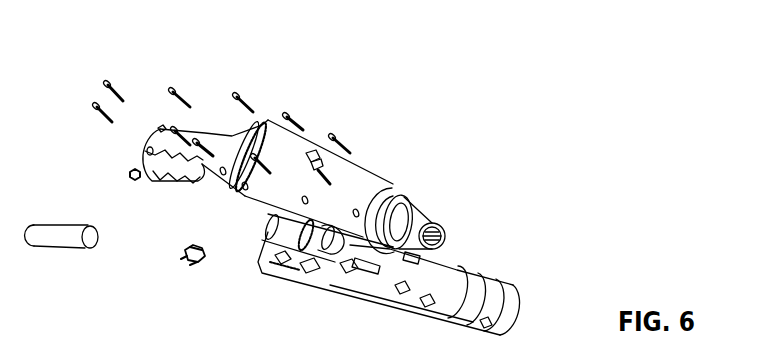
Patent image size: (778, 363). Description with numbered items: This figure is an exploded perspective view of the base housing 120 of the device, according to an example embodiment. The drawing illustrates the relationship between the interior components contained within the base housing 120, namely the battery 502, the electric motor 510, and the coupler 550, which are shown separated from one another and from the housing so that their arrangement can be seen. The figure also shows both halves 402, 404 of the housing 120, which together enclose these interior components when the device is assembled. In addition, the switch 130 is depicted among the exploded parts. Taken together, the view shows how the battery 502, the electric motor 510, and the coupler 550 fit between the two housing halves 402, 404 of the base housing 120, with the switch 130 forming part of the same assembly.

The base housing 120 is at (311, 196).
The housing half 402 is at (353, 158).
The coupler 550 is at (423, 208).
The housing half 404 is at (520, 290).
The electric motor 510 is at (292, 222).
The switch 130 is at (180, 250).
The battery 502 is at (72, 247).